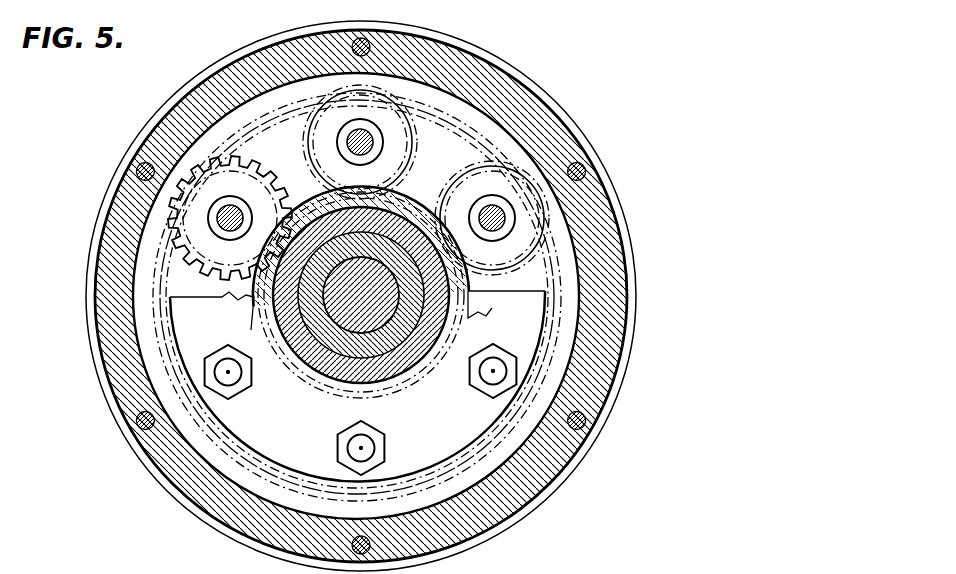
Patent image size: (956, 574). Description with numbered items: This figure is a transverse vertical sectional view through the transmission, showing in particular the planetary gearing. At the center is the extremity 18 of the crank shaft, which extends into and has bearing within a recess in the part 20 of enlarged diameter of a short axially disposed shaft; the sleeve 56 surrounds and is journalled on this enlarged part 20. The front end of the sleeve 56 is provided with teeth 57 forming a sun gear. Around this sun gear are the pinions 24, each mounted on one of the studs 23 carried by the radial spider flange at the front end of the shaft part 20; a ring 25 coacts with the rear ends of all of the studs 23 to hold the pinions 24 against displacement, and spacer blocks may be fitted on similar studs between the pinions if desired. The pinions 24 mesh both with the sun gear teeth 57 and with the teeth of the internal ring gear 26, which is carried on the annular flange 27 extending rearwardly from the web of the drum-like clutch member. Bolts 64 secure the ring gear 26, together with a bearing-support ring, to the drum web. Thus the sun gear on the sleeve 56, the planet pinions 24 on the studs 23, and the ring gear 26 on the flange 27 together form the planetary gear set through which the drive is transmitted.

The shaft extremity 18 is at (337, 322).
The part of enlarged diameter 20 is at (387, 345).
The studs 23 is at (238, 210).
The pinion 24 is at (485, 178).
The ring 25 is at (357, 333).
The internal ring gear 26 is at (606, 360).
The annular flange 27 is at (643, 305).
The sleeve 56 is at (394, 218).
The teeth 57 is at (228, 272).
The bolts 64 is at (138, 172).